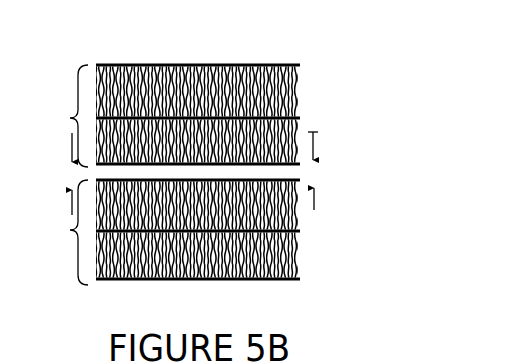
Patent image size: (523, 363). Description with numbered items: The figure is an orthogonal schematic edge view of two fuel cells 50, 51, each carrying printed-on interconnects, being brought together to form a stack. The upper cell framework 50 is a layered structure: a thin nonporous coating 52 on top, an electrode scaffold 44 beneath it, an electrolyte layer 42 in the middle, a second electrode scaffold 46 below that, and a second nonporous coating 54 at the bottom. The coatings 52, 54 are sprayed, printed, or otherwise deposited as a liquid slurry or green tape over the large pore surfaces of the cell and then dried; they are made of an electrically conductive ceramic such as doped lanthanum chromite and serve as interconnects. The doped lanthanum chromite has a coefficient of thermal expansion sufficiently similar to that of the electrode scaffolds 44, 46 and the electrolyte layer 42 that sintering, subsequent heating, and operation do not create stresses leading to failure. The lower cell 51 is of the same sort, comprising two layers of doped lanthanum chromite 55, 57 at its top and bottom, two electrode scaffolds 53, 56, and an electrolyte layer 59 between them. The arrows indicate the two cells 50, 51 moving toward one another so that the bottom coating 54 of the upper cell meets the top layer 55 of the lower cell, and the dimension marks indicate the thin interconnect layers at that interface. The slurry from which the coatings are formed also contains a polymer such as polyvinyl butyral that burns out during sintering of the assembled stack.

The cell framework 50 is at (251, 97).
The cell 51 is at (247, 244).
The nonporous coating 52 is at (223, 65).
The electrode scaffold 44 is at (293, 92).
The electrolyte layer 42 is at (297, 116).
The electrode scaffold 46 is at (283, 145).
The nonporous coating 54 is at (283, 163).
The doped lanthanum chromite layer 55 is at (300, 182).
The electrode scaffold 53 is at (297, 217).
The electrolyte layer 59 is at (293, 229).
The electrode scaffold 56 is at (297, 250).
The doped lanthanum chromite layer 57 is at (297, 282).